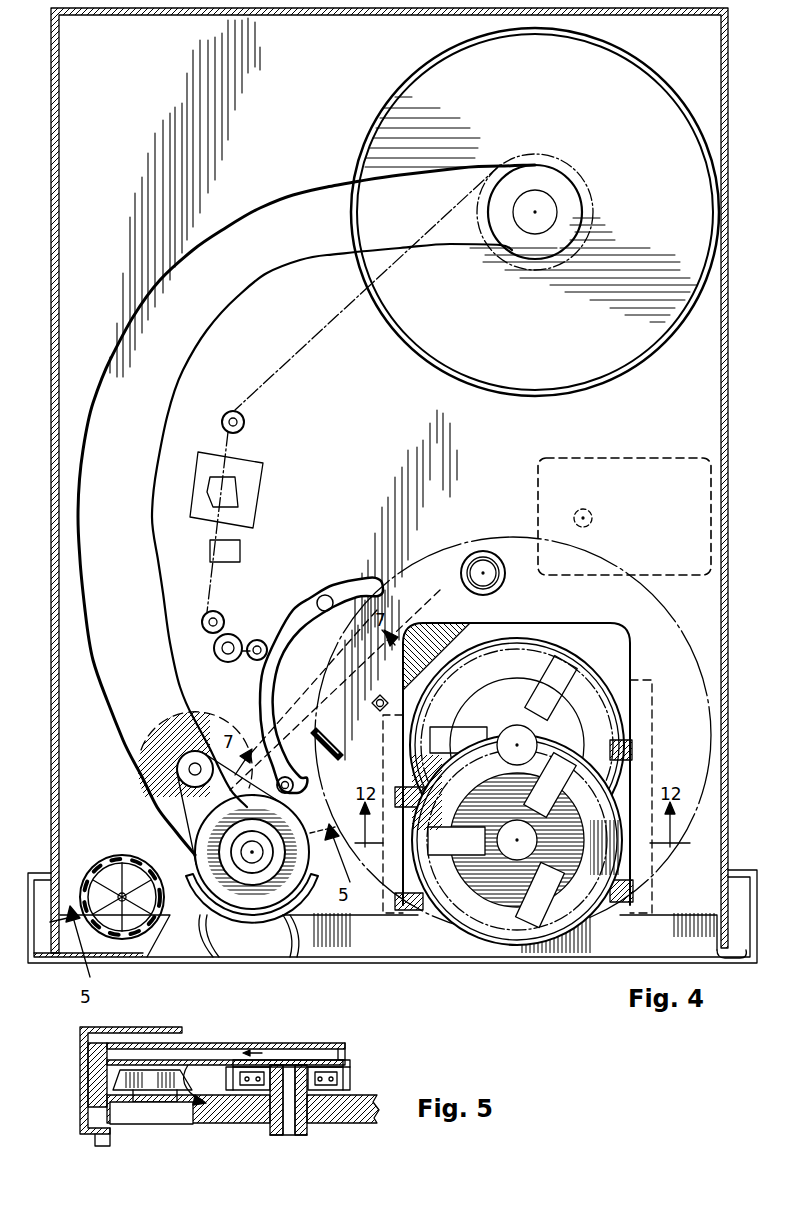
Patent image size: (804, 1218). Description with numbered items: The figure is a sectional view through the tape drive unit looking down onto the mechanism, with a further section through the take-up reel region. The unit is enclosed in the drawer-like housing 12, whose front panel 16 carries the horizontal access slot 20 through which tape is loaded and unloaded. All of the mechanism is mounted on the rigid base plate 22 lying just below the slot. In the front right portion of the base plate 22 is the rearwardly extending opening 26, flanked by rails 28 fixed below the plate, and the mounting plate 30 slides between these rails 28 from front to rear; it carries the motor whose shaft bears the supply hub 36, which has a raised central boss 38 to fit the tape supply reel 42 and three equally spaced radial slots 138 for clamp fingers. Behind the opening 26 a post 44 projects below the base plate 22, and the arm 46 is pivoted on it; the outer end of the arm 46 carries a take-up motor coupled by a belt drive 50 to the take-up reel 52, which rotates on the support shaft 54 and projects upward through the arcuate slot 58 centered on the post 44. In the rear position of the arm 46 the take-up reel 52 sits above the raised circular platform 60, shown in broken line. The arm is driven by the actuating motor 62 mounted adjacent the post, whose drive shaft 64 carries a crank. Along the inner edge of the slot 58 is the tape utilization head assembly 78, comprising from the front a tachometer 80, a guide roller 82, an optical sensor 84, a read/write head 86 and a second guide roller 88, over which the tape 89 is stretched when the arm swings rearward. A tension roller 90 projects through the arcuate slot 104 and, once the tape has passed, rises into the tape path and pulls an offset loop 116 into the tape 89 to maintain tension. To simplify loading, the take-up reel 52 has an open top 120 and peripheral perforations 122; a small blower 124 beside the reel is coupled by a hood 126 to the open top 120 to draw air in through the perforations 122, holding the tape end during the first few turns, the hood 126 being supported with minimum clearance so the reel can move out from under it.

In FIG. 4, the housing 12 is at (56, 574).
In FIG. 5, the housing 12 is at (82, 1080).
In FIG. 4, the front panel 16 is at (738, 962).
In FIG. 4, the access slot 20 is at (318, 945).
In FIG. 4, the base plate 22 is at (72, 745).
In FIG. 5, the base plate 22 is at (352, 1118).
In FIG. 4, the opening 26 is at (619, 641).
In FIG. 4, the rails 28 is at (655, 716).
In FIG. 4, the mounting plate 30 is at (625, 890).
In FIG. 4, the supply hub 36 is at (508, 650).
In FIG. 4, the central boss 38 is at (477, 898).
In FIG. 4, the tape supply reel 42 is at (653, 598).
In FIG. 4, the post 44 is at (477, 552).
In FIG. 4, the arm 46 is at (175, 720).
In FIG. 4, the belt drive 50 is at (180, 797).
In FIG. 4, the take-up reel 52 is at (575, 184).
In FIG. 5, the take-up reel 52 is at (348, 1062).
In FIG. 5, the support shaft 54 is at (272, 1120).
In FIG. 4, the arcuate slot 58 is at (128, 394).
In FIG. 4, the raised circular platform 60 is at (577, 372).
In FIG. 4, the actuating motor 62 is at (630, 456).
In FIG. 4, the drive shaft 64 is at (593, 516).
In FIG. 4, the tape utilization head assembly 78 is at (190, 548).
In FIG. 4, the tachometer 80 is at (221, 660).
In FIG. 4, the guide roller 82 is at (221, 611).
In FIG. 4, the optical sensor 84 is at (240, 548).
In FIG. 4, the read/write head 86 is at (238, 496).
In FIG. 4, the guide roller 88 is at (245, 422).
In FIG. 4, the tape 89 is at (330, 322).
In FIG. 4, the tension roller 90 is at (322, 598).
In FIG. 4, the arcuate slot 104 is at (277, 681).
In FIG. 4, the offset loop 116 is at (296, 624).
In FIG. 4, the open top 120 is at (196, 850).
In FIG. 5, the open top 120 is at (308, 1062).
In FIG. 5, the peripheral perforations 122 is at (332, 1078).
In FIG. 4, the blower 124 is at (112, 860).
In FIG. 5, the blower 124 is at (140, 1068).
In FIG. 5, the hood 126 is at (223, 1043).
In FIG. 4, the radial slots 138 is at (460, 855).